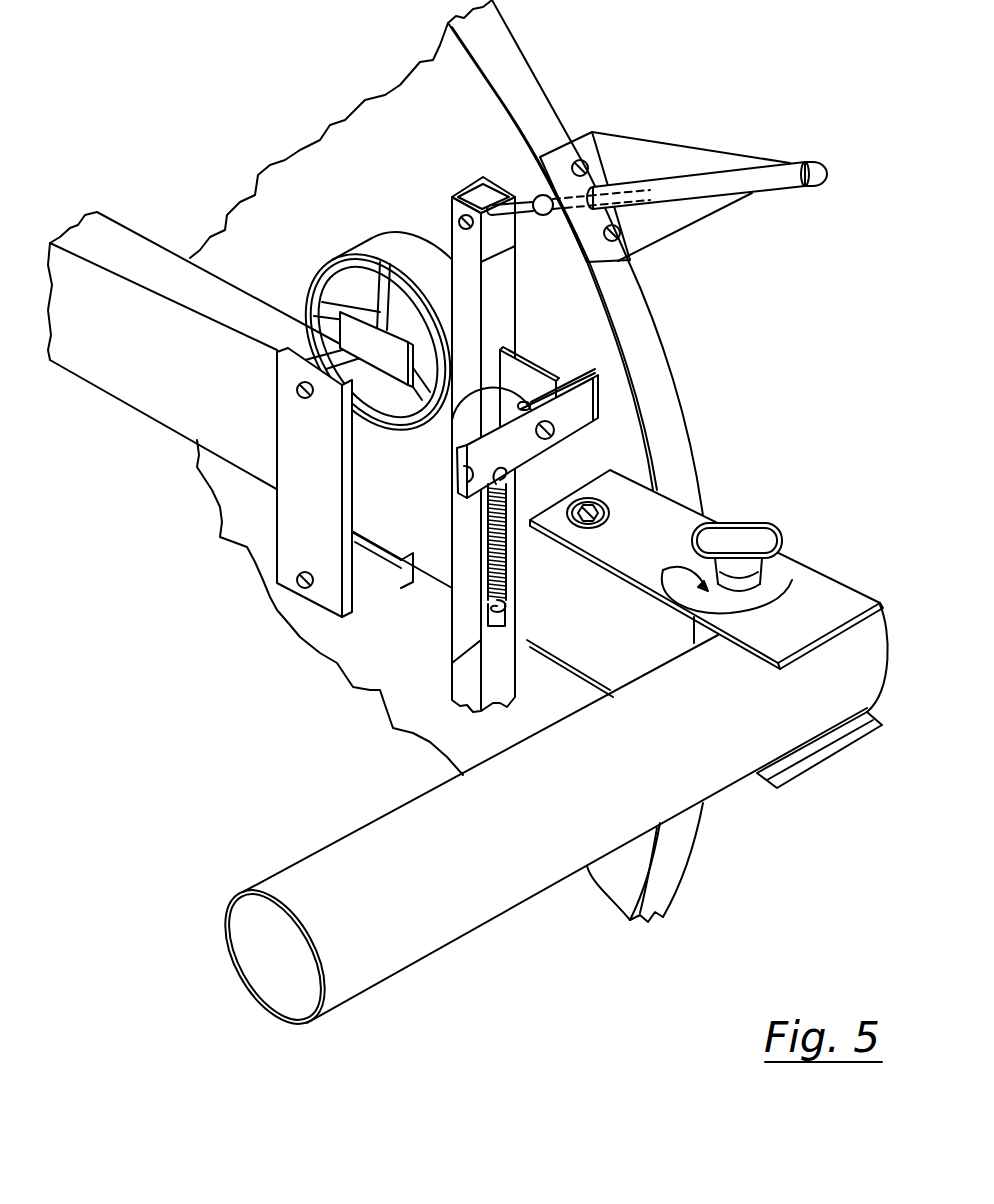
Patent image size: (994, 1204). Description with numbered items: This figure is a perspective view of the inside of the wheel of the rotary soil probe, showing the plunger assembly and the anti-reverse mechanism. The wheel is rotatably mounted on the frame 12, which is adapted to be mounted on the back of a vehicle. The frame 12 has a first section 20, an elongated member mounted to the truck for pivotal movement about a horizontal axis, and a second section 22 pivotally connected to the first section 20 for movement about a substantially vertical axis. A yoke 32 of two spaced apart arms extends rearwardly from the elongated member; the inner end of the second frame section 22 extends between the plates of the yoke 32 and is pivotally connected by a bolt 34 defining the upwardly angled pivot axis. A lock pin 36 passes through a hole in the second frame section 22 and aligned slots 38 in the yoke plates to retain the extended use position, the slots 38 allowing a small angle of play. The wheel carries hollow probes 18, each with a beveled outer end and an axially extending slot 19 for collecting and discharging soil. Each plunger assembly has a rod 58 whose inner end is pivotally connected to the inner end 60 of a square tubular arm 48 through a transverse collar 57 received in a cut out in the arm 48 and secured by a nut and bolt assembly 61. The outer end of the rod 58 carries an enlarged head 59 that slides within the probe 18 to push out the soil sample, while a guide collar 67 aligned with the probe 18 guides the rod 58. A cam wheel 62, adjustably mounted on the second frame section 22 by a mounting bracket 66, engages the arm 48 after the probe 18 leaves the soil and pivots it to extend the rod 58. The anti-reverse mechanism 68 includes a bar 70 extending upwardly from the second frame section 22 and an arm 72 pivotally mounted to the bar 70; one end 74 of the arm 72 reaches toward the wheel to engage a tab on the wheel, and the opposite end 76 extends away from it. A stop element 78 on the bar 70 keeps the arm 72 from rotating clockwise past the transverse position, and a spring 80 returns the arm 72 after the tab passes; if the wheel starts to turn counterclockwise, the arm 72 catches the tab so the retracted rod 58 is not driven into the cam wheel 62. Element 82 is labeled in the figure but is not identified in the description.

The frame 12 is at (134, 190).
The probe 18 is at (780, 186).
The axially extending slot 19 is at (707, 187).
The first frame section 20 is at (372, 818).
The second frame section 22 is at (437, 586).
The yoke 32 is at (728, 525).
The bolt 34 is at (600, 500).
The lock pin 36 is at (765, 524).
The slots 38 is at (792, 582).
The arm 48 is at (505, 283).
The transverse collar 57 is at (512, 152).
The rod 58 is at (553, 152).
The enlarged head 59 is at (803, 160).
The inner end of arm 60 is at (502, 100).
The nut and bolt assembly 61 is at (452, 228).
The cam wheel 62 is at (315, 272).
The mounting bracket 66 is at (277, 425).
The guide collar 67 is at (538, 215).
The anti-reverse mechanism 68 is at (550, 355).
The bar 70 is at (553, 408).
The arm 72 is at (578, 392).
The one end of arm 74 is at (585, 425).
The opposite end of arm 76 is at (460, 470).
The stop element 78 is at (462, 417).
The spring 80 is at (487, 505).
The lower hook 82 is at (452, 663).